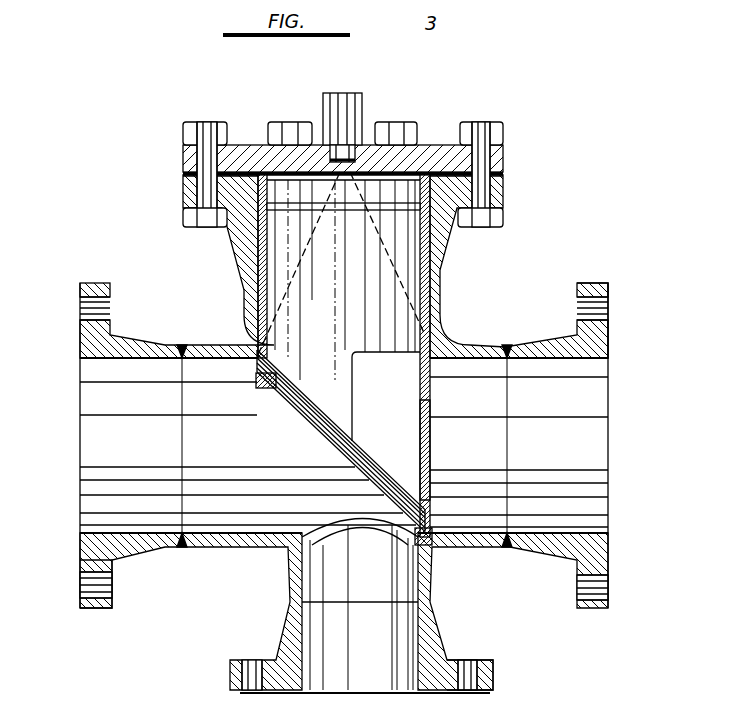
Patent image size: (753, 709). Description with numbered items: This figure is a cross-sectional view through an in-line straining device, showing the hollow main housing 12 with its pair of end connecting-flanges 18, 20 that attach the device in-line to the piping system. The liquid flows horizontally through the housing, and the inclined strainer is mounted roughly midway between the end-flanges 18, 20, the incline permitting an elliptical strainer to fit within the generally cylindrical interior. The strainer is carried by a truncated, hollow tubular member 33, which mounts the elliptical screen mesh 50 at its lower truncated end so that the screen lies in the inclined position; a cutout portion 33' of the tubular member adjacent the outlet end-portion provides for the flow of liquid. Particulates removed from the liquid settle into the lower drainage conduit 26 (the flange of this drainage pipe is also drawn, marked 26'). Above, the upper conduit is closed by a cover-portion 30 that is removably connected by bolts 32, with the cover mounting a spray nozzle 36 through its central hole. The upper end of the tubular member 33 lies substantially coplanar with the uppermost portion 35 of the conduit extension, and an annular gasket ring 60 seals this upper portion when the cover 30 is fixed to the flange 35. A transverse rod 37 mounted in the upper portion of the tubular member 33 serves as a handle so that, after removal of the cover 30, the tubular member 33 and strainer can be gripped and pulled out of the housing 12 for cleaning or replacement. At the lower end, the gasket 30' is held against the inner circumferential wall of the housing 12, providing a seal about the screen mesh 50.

The main housing 12 is at (240, 340).
The end connecting-flange 18 is at (90, 553).
The end connecting-flange 20 is at (612, 345).
The drainage conduit 26 is at (323, 605).
The bottom port flange 26' is at (472, 656).
The cover-portion 30 is at (343, 273).
The connecting-flange portion 30' is at (365, 478).
The bolts 32 is at (207, 133).
The tubular member 33 is at (372, 356).
The cutout portion of tubular member 33' is at (446, 450).
The uppermost portion 35 is at (490, 212).
The spray nozzle 36 is at (372, 78).
The transverse rod 37 is at (333, 228).
The screen mesh 50 is at (290, 403).
The annular gasket ring 60 is at (262, 150).